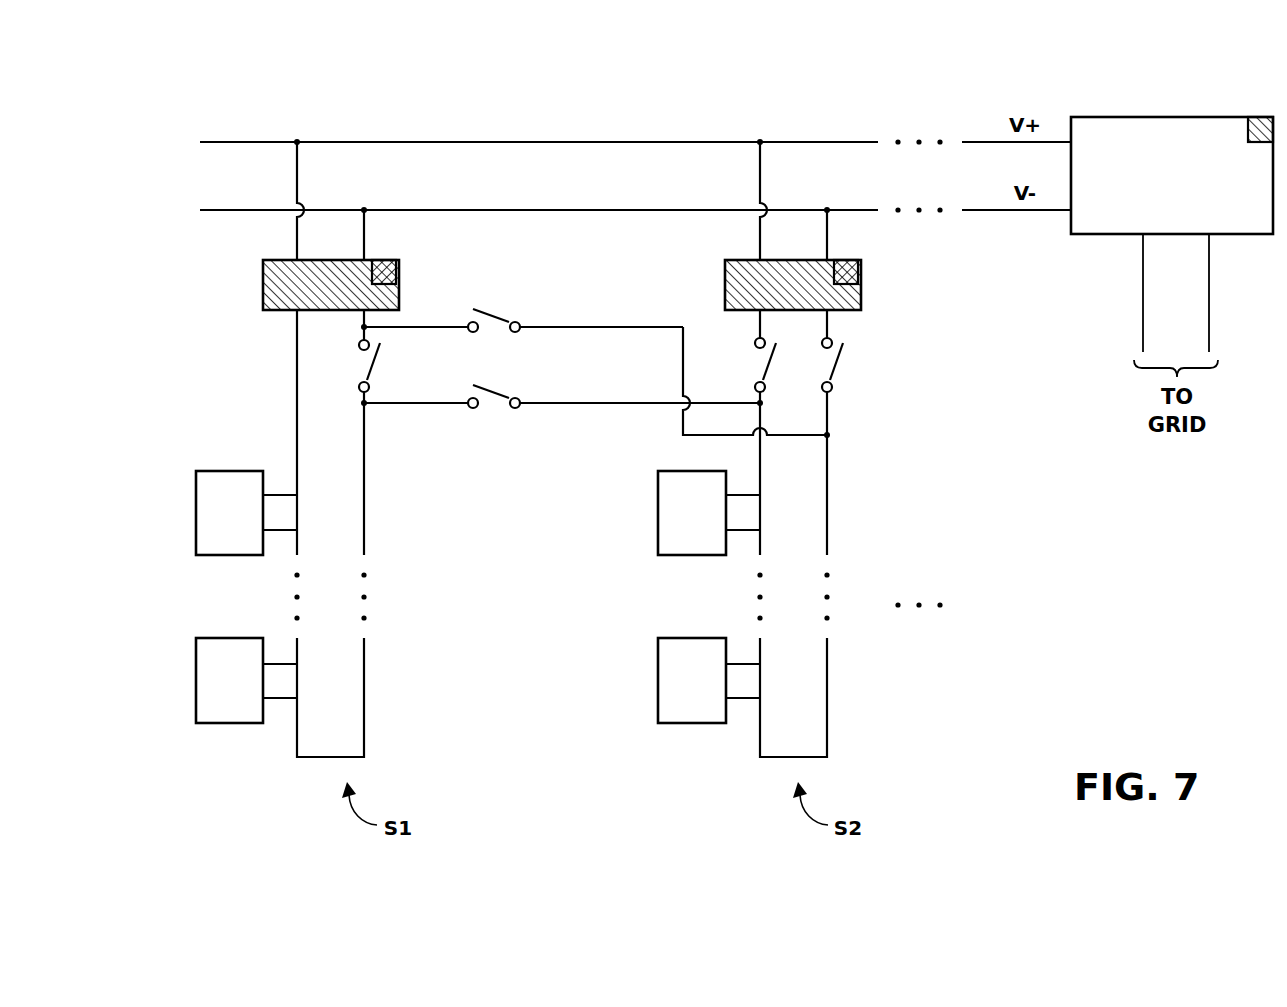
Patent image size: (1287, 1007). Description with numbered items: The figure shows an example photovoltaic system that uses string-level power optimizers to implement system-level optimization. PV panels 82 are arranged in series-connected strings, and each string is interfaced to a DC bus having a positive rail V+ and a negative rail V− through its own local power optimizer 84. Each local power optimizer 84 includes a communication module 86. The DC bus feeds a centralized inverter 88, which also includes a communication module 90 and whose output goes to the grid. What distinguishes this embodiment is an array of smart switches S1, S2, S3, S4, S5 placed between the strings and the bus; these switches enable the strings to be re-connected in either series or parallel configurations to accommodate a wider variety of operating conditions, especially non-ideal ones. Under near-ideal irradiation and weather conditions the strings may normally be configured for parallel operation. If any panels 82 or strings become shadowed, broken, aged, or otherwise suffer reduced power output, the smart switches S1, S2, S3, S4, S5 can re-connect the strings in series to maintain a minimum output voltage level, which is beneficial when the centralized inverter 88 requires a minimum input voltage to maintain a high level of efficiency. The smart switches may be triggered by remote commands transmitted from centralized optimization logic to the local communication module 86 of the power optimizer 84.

The PV panels 82 is at (196, 510).
The local power optimizer 84 is at (333, 260).
The communication module 86 is at (387, 260).
The centralized inverter 88 is at (1104, 117).
The communication module 90 is at (1258, 117).
The smart switch S1 is at (384, 366).
The smart switch S2 is at (523, 308).
The smart switch S3 is at (562, 384).
The smart switch S4 is at (779, 365).
The smart switch S5 is at (846, 365).